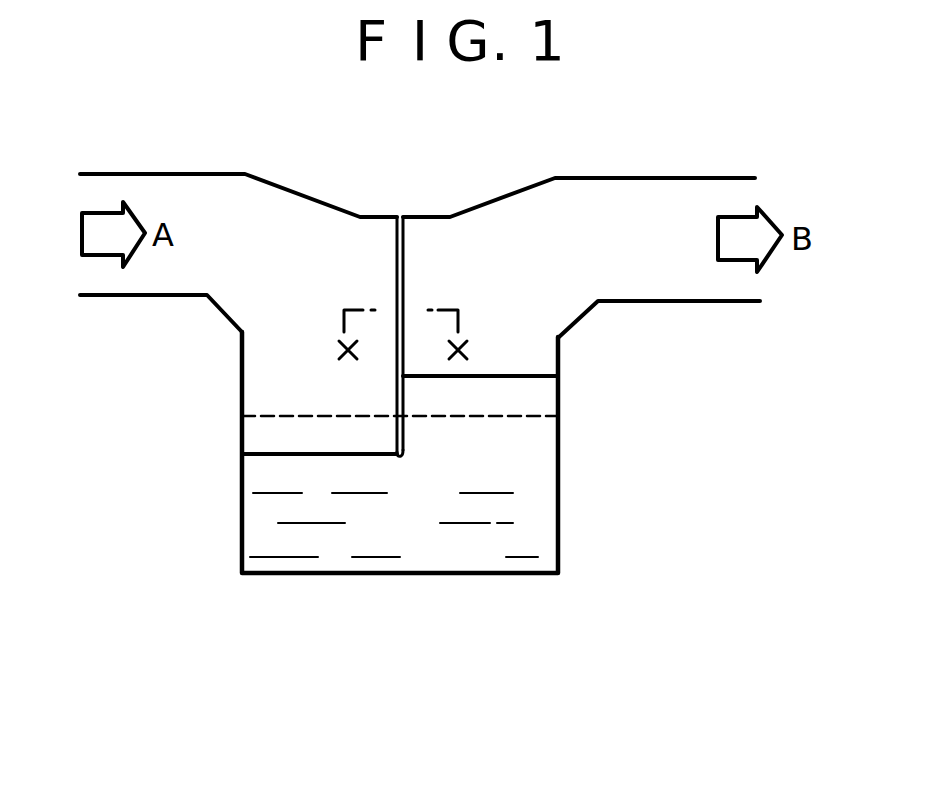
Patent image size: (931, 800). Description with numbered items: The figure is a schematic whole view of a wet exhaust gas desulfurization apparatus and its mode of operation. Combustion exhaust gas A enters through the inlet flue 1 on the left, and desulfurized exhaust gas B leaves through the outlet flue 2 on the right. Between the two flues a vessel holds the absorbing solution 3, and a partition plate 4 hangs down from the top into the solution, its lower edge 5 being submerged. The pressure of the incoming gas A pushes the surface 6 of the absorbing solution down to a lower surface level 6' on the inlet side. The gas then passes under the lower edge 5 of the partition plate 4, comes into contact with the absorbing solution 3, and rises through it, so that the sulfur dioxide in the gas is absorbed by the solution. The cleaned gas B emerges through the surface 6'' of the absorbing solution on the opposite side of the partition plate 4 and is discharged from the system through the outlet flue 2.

The inlet flue 1 is at (100, 184).
The outlet flue 2 is at (690, 200).
The absorbing solution 3 is at (397, 551).
The partition plate 4 is at (405, 272).
The lower edge of the partition plate 5 is at (399, 458).
The surface of the absorbing solution 6 is at (400, 393).
The lower surface level 6' is at (319, 436).
The surface of the absorbing solution on the opposite side of the partition plate 6'' is at (480, 351).